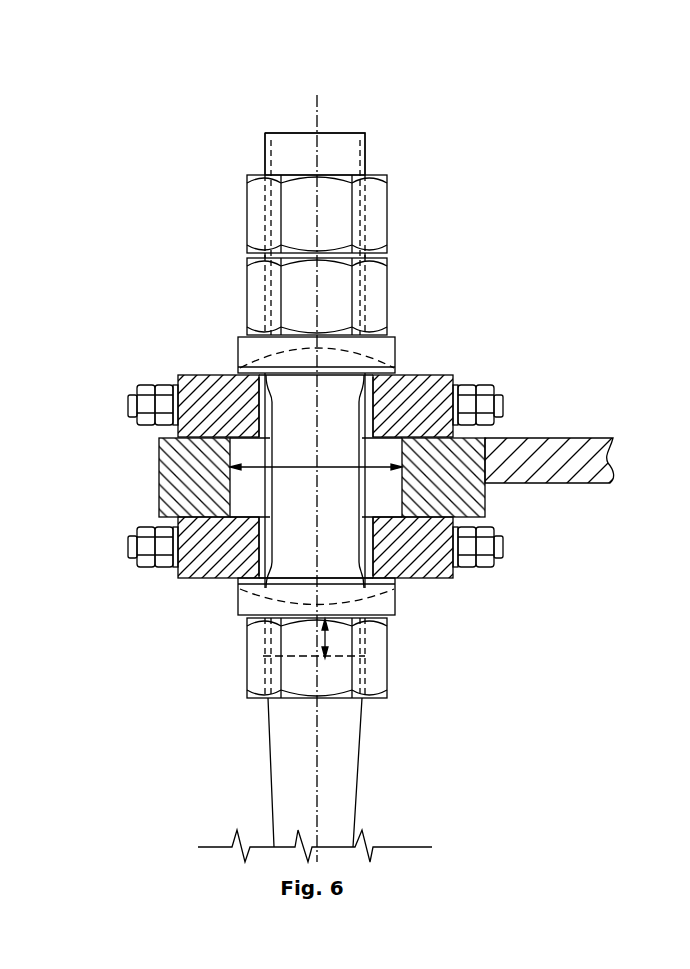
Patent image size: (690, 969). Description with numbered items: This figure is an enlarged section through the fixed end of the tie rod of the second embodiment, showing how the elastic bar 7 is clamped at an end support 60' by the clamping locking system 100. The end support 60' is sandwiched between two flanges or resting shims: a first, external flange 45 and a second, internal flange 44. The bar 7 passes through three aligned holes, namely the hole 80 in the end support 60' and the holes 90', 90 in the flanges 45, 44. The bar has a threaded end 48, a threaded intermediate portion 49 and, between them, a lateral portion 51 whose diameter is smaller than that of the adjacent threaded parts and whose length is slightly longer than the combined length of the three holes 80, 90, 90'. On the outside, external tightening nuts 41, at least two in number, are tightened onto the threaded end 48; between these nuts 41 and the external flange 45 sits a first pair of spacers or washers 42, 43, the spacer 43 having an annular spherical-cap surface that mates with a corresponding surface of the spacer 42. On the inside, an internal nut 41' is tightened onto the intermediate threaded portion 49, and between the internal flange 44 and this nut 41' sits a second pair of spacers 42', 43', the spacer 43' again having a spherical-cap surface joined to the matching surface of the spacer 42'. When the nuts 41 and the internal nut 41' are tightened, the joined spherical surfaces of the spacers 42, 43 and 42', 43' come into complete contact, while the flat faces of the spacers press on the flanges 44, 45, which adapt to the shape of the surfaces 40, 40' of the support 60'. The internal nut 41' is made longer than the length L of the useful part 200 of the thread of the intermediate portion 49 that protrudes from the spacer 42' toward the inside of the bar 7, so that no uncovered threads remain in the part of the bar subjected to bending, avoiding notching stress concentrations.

The elastic bar 7 is at (350, 808).
The threaded end 48 is at (368, 158).
The external tightening nuts 41 is at (260, 255).
The washer assembly 100 is at (321, 501).
The spacer 42 is at (359, 322).
The spacer 43 is at (373, 342).
The spacer 42' is at (380, 627).
The spacer 43' is at (373, 613).
The surface of the support 40 is at (359, 361).
The first flange 45 is at (203, 393).
The hole 90' is at (216, 414).
The surface of the support 40' is at (386, 614).
The second flange 44 is at (212, 550).
The intermediate threaded portion 49 is at (235, 560).
The hole 90 is at (226, 561).
The end support 60' is at (270, 477).
The lateral portion 51 is at (287, 498).
The hole 80 is at (447, 492).
The internal nut 41' is at (365, 682).
The useful part of the thread 200 is at (362, 637).
The length L is at (322, 640).